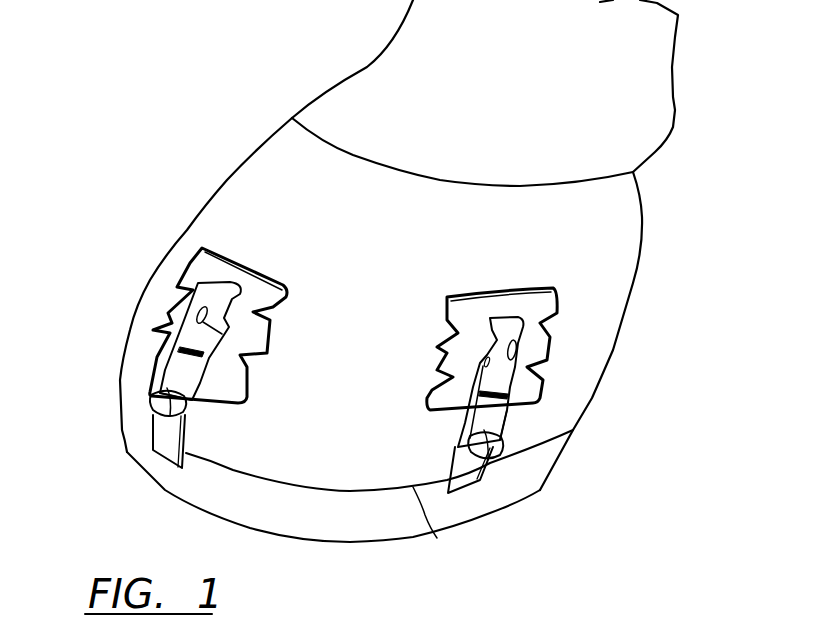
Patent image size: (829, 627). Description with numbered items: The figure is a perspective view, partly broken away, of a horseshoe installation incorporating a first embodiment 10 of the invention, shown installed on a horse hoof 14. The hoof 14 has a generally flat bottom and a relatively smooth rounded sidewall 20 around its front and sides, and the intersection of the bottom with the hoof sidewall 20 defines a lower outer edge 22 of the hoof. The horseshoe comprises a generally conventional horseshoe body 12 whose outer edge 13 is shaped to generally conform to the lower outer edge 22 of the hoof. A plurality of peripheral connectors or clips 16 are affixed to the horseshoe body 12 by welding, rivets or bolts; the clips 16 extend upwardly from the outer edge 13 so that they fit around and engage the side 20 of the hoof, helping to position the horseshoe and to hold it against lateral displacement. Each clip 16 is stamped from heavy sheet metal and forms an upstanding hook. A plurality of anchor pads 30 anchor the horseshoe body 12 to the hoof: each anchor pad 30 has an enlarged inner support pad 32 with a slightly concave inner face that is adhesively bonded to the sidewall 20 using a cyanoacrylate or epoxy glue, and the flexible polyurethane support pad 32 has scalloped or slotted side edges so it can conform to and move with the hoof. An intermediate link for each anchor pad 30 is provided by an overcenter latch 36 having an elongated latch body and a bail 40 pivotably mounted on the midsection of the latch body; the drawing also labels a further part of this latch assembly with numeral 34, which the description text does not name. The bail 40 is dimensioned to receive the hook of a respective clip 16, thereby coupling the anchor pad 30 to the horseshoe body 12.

The first embodiment 10 is at (402, 281).
The horseshoe body 12 is at (543, 462).
The outer edge 13 is at (128, 412).
The horse hoof 14 is at (615, 221).
The clip 16 is at (163, 452).
The sidewall 20 is at (277, 153).
The lower outer edge 22 is at (437, 538).
The anchor pad 30 is at (340, 372).
The inner support pad 32 is at (197, 255).
The roller 34 is at (193, 400).
The overcenter latch 36 is at (187, 298).
The bail 40 is at (150, 377).